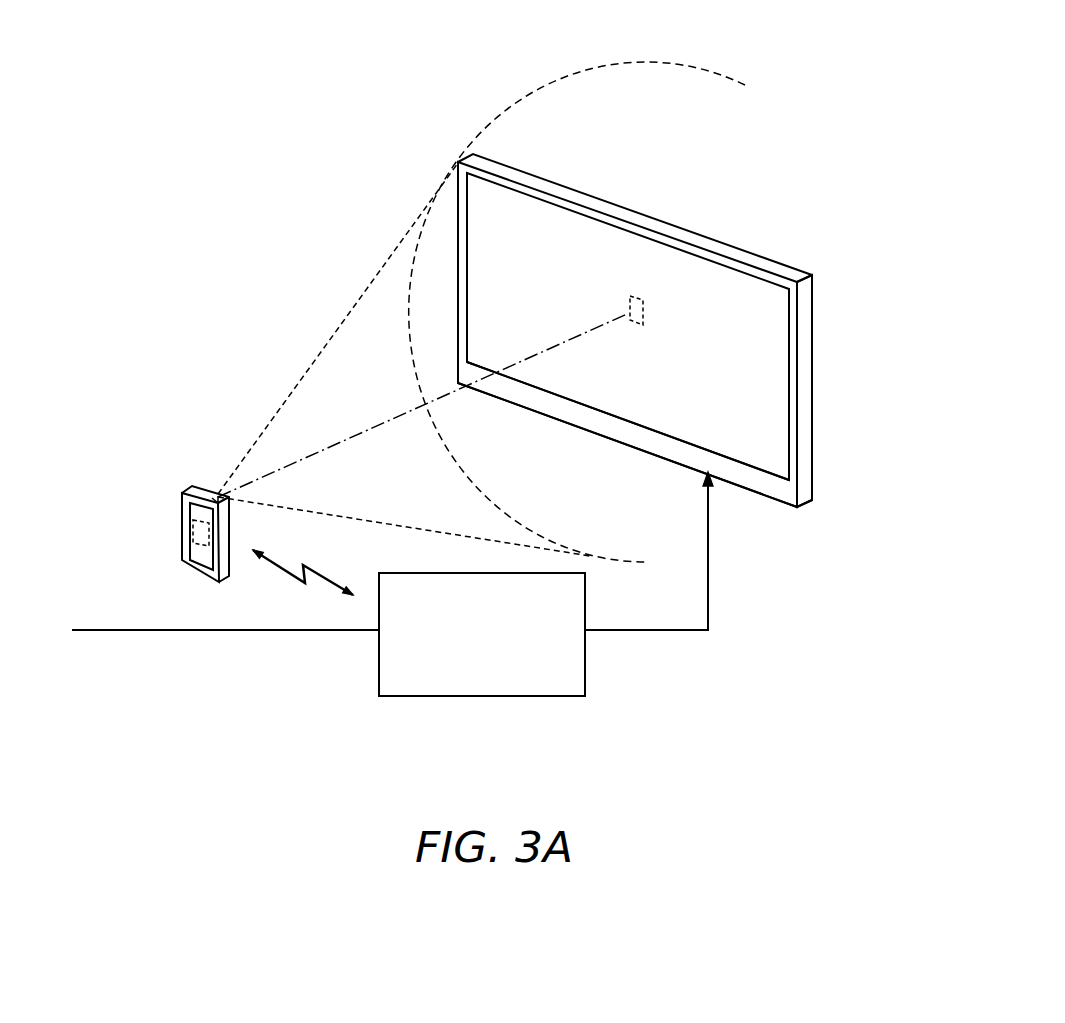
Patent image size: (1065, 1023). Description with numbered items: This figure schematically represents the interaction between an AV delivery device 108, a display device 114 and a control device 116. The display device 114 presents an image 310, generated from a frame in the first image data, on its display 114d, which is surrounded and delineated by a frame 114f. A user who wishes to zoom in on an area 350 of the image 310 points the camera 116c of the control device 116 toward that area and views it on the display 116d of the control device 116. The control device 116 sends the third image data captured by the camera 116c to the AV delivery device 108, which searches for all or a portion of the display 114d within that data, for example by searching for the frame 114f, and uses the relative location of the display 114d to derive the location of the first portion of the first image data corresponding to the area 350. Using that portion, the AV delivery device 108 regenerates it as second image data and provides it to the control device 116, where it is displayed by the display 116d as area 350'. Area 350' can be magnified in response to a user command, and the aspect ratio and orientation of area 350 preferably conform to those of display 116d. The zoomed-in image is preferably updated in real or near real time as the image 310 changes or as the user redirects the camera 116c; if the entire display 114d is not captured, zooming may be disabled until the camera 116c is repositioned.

The display device 114 is at (595, 200).
The image 310 is at (720, 287).
The display 114d is at (762, 365).
The frame 114f is at (605, 422).
The area 350 is at (596, 288).
The control device 116 is at (183, 507).
The camera 116c is at (212, 496).
The display 116d is at (198, 563).
The area 350' is at (132, 525).
The AV delivery device 108 is at (478, 697).